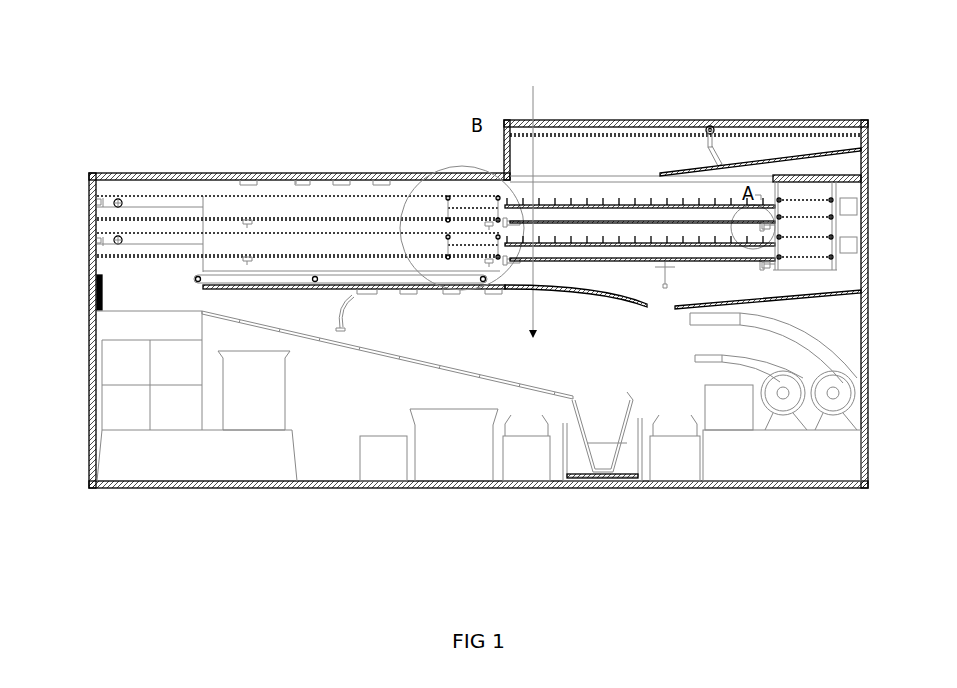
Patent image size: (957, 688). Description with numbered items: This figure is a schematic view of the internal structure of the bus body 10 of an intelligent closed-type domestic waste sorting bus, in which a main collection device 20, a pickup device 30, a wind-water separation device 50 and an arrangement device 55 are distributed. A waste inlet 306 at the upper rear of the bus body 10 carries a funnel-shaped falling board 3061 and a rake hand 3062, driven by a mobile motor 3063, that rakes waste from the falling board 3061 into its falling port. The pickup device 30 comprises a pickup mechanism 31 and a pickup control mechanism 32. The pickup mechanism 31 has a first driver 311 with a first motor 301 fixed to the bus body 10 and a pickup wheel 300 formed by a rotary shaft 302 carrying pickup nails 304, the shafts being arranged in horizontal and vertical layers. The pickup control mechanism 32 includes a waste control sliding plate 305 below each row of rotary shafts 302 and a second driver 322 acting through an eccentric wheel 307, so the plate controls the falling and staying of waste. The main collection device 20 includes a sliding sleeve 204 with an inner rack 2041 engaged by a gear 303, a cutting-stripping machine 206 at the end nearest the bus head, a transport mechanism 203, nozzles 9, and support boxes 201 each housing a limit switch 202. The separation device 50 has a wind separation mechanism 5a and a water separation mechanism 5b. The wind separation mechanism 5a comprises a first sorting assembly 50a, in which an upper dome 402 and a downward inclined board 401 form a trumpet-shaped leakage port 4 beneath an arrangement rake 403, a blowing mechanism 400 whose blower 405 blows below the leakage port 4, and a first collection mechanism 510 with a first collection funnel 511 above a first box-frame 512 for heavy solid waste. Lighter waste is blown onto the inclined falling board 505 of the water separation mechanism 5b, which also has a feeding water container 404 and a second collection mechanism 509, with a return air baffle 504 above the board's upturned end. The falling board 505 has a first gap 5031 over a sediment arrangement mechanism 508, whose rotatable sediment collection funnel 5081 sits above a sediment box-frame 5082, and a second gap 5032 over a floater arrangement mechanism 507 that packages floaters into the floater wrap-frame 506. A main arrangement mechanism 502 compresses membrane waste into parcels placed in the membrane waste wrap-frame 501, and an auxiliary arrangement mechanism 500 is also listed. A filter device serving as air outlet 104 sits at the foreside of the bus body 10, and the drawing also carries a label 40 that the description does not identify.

The wind separation mechanism 5a is at (498, 334).
The bus body 10 is at (315, 155).
The nozzles 9 is at (355, 212).
The main collection device 20 is at (238, 199).
The support box 201 is at (298, 179).
The sliding sleeve 204 is at (248, 168).
The cutting-stripping machine 206 is at (131, 187).
The limit switch 202 is at (267, 219).
The transport mechanism 203 is at (270, 262).
The gear 303 is at (411, 144).
The rack 2041 is at (470, 180).
The eccentric wheel 307 is at (668, 170).
The filter device 104 is at (68, 291).
The pickup device 30 is at (640, 144).
The pickup nail 304 is at (640, 169).
The waste control sliding plate 305 is at (570, 118).
The rotary shaft 302 is at (593, 120).
The first sorting assembly 50a is at (712, 112).
The separation device 50 is at (520, 200).
The pickup mechanism 31 is at (703, 178).
The mobile motor 3063 is at (739, 100).
The rake hand 3062 is at (769, 109).
The falling board 3061 is at (798, 116).
The waste inlet 306 is at (793, 149).
The first driver 311 is at (856, 209).
The first motor 301 is at (853, 219).
The second driver 322 is at (846, 237).
The upper dome 402 is at (592, 180).
The downward inclined board 401 is at (807, 305).
The pickup control mechanism 32 is at (791, 305).
The pickup wheel 300 is at (818, 313).
The arrangement rake 403 is at (814, 360).
The blowing mechanism 400 is at (913, 425).
The platform 40 is at (817, 467).
The blower 405 is at (850, 423).
The feeding water container 404 is at (776, 465).
The leakage port 4 is at (727, 432).
The first collection mechanism 510 is at (699, 473).
The first collection funnel 511 is at (701, 513).
The first box-frame 512 is at (699, 505).
The auxiliary arrangement mechanism 500 is at (641, 585).
The arrangement device 55 is at (391, 583).
The sediment arrangement mechanism 508 is at (597, 469).
The second collection mechanism 509 is at (605, 462).
The sediment collection funnel 5081 is at (544, 496).
The sediment box-frame 5082 is at (543, 532).
The first gap 5031 is at (564, 467).
The floater arrangement mechanism 507 is at (462, 474).
The second gap 5032 is at (454, 456).
The floater wrap-frame 506 is at (389, 489).
The water separation mechanism 5b is at (364, 500).
The falling board 505 is at (387, 428).
The return air baffle 504 is at (306, 420).
The main arrangement mechanism 502 is at (236, 449).
The membrane waste wrap-frame 501 is at (166, 396).